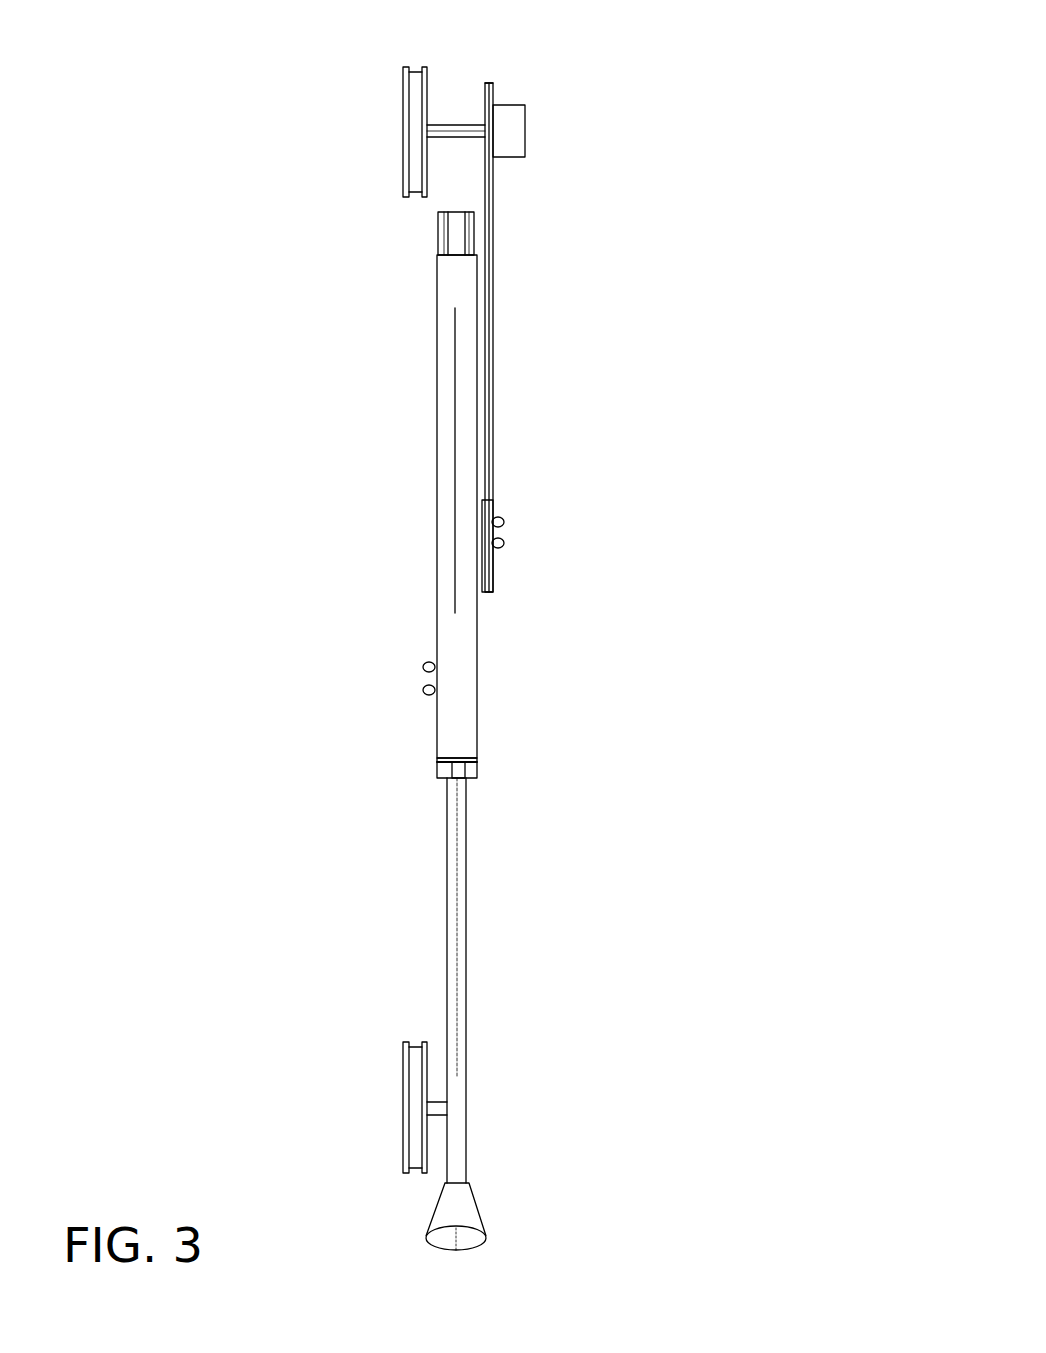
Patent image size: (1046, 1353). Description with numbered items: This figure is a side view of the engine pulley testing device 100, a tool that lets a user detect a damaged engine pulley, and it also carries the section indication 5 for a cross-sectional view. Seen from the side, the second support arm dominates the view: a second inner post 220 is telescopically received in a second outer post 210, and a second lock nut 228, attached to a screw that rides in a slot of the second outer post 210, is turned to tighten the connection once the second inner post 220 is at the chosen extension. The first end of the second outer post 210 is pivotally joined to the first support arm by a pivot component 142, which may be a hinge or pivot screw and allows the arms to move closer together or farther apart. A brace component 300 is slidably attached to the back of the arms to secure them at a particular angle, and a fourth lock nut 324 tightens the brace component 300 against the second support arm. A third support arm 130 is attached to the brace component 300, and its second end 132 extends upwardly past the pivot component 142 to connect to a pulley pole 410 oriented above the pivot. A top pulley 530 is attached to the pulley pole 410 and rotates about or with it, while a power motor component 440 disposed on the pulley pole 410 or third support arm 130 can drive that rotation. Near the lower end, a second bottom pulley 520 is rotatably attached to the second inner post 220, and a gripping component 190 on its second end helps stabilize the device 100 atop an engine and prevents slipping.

The engine pulley testing device 100 is at (753, 261).
The section line 5 is at (456, 100).
The top pulley 530 is at (403, 80).
The pulley pole 410 is at (438, 138).
The third support arm 130 is at (494, 285).
The second end of the third support arm 132 is at (492, 85).
The power motor component 440 is at (525, 135).
The pivot component 142 is at (440, 250).
The second outer post 210 is at (477, 677).
The brace component 300 is at (477, 592).
The fourth lock nut 324 is at (502, 518).
The second lock nut 228 is at (425, 693).
The second inner post 220 is at (466, 918).
The second bottom pulley 520 is at (403, 1113).
The gripping component 190 is at (472, 1212).